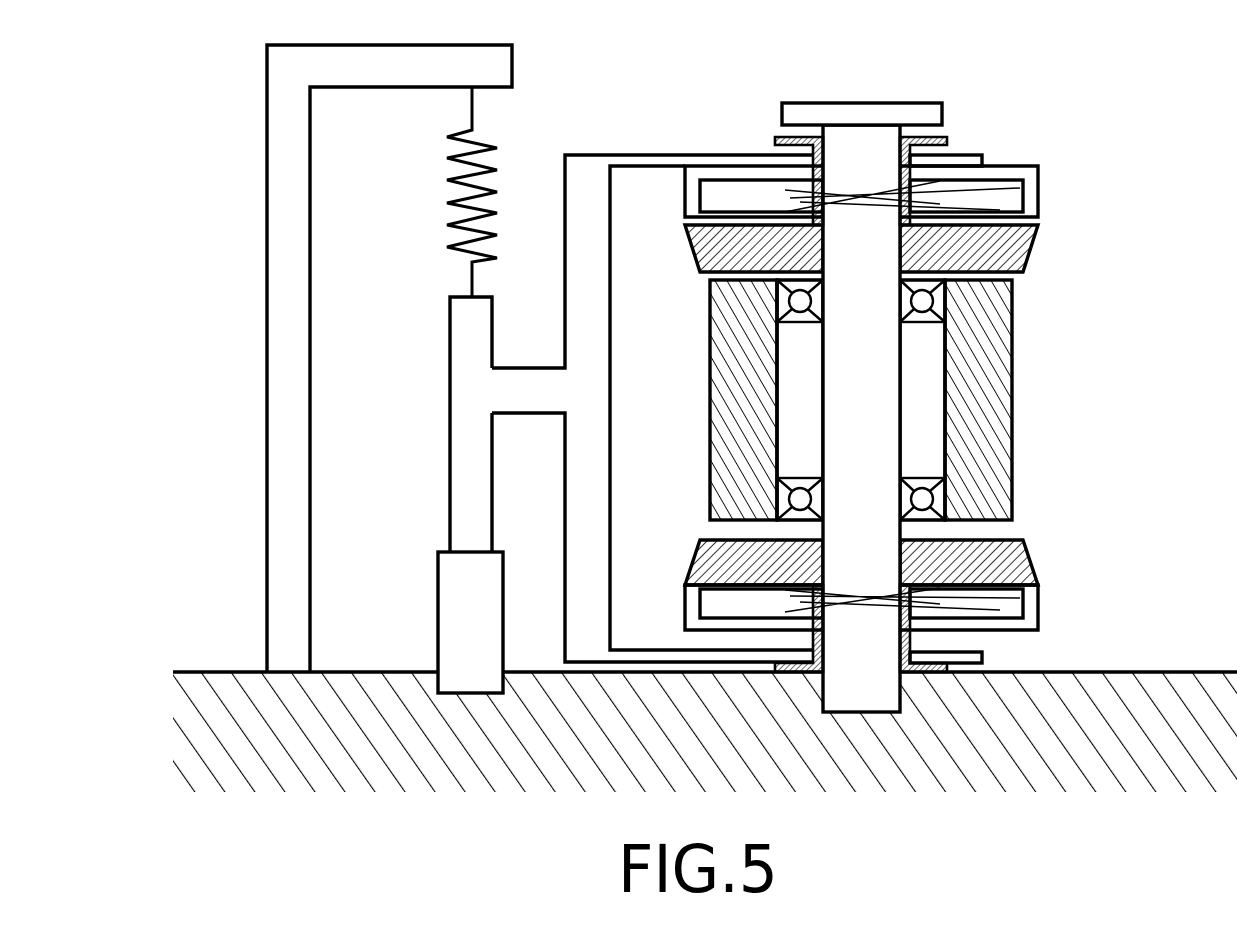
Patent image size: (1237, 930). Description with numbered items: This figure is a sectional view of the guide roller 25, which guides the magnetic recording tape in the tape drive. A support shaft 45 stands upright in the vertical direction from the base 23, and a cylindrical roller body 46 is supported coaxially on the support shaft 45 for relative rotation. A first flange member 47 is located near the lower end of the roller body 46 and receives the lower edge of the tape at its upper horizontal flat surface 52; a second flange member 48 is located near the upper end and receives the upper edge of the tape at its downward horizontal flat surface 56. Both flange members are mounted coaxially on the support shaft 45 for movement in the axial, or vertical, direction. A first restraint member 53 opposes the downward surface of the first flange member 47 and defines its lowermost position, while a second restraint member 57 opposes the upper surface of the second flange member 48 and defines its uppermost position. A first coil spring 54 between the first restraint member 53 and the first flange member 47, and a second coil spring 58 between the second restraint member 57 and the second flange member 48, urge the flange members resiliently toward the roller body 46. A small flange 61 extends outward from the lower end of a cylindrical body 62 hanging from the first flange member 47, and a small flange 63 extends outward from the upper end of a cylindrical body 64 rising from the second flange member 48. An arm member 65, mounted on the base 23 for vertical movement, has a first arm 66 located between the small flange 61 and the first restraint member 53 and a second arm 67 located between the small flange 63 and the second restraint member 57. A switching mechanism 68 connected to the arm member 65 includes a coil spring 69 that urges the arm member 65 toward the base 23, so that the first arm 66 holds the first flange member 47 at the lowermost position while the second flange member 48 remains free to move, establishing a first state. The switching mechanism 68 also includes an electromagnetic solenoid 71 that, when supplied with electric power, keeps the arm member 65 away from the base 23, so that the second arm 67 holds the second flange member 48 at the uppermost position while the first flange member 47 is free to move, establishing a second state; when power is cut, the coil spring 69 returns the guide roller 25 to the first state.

The base 23 is at (1160, 672).
The guide roller 25 is at (1137, 228).
The support shaft 45 is at (850, 103).
The roller body 46 is at (1012, 322).
The first flange member 47 is at (1023, 542).
The second flange member 48 is at (1023, 268).
The upper horizontal flat surface 52 is at (700, 540).
The first restraint member 53 is at (1038, 605).
The first coil spring 54 is at (790, 605).
The downward horizontal flat surface 56 is at (700, 272).
The second restraint member 57 is at (1038, 197).
The second coil spring 58 is at (820, 190).
The small flange 61 is at (950, 668).
The cylindrical body 62 is at (955, 655).
The small flange 63 is at (933, 142).
The cylindrical body 64 is at (920, 203).
The arm member 65 is at (450, 391).
The first arm 66 is at (655, 662).
The second arm 67 is at (650, 155).
The switching mechanism 68 is at (432, 256).
The coil spring 69 is at (450, 157).
The electromagnetic solenoid 71 is at (438, 578).